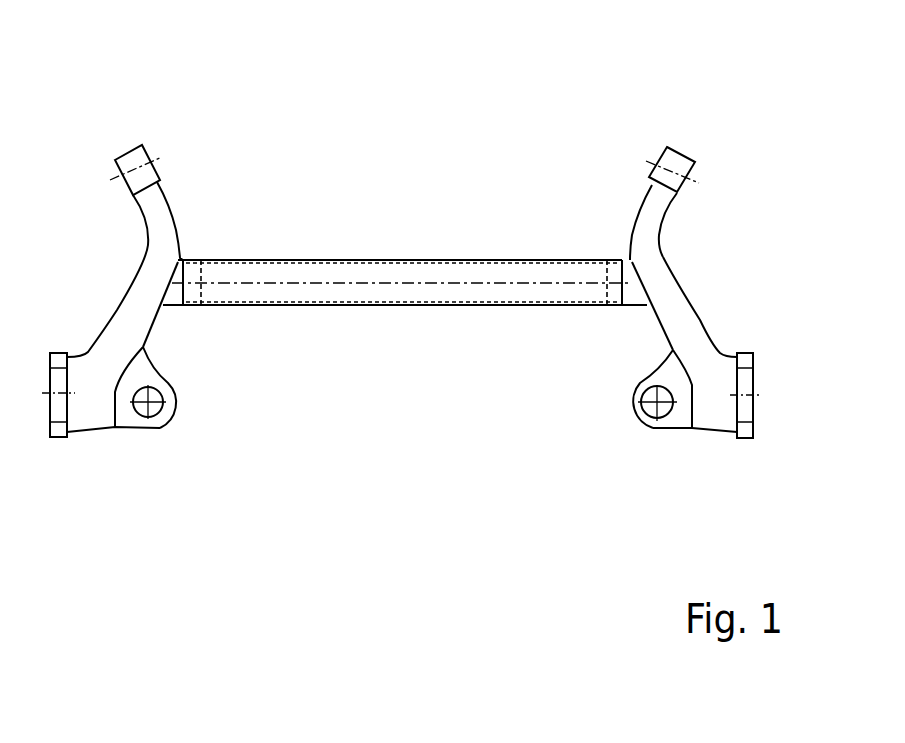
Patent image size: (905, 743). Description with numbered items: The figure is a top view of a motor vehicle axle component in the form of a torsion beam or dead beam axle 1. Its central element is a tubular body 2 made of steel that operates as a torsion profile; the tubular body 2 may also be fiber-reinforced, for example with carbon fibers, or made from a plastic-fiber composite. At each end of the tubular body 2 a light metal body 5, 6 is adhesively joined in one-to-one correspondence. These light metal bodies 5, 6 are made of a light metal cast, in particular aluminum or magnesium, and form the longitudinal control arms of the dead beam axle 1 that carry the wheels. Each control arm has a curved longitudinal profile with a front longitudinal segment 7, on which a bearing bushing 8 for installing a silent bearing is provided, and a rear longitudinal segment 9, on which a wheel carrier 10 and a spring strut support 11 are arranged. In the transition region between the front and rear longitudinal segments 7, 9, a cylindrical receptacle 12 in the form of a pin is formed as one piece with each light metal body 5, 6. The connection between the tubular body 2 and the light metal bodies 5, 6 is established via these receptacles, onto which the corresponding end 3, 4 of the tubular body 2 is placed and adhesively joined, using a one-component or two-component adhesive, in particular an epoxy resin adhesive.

The dead beam axle 1 is at (553, 99).
The tubular body 2 is at (467, 260).
The end of the tubular body 3 is at (200, 262).
The end of the tubular body 4 is at (607, 260).
The light metal body 5 is at (111, 322).
The light metal body 6 is at (696, 312).
The front longitudinal segment 7 is at (660, 223).
The bearing bushing 8 is at (690, 173).
The rear longitudinal segment 9 is at (665, 333).
The wheel carrier 10 is at (750, 362).
The spring strut support 11 is at (668, 430).
The cylindrical receptacle 12 is at (195, 307).